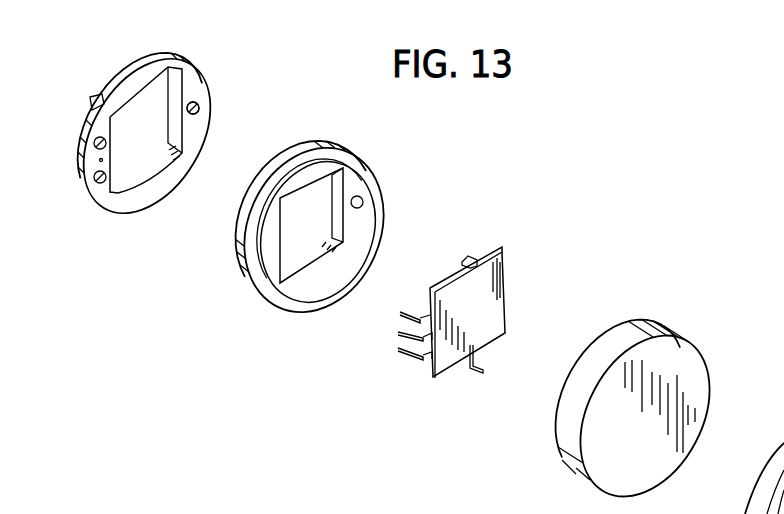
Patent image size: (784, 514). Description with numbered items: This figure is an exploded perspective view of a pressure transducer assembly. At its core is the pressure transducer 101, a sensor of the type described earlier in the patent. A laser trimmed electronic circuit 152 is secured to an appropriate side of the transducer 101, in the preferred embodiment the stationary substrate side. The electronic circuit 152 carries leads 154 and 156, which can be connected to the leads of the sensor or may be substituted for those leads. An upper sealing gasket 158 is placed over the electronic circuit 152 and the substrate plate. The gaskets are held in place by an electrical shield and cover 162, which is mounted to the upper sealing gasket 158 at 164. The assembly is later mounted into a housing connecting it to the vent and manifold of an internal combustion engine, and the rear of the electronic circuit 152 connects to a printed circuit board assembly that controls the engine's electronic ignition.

The pressure transducer 101 is at (707, 362).
The laser trimmed electronic circuit 152 is at (505, 303).
The lead 154 is at (503, 255).
The lead 156 is at (485, 372).
The upper sealing gasket 158 is at (378, 227).
The electrical shield and cover 162 is at (194, 82).
The mounting location 164 is at (200, 106).